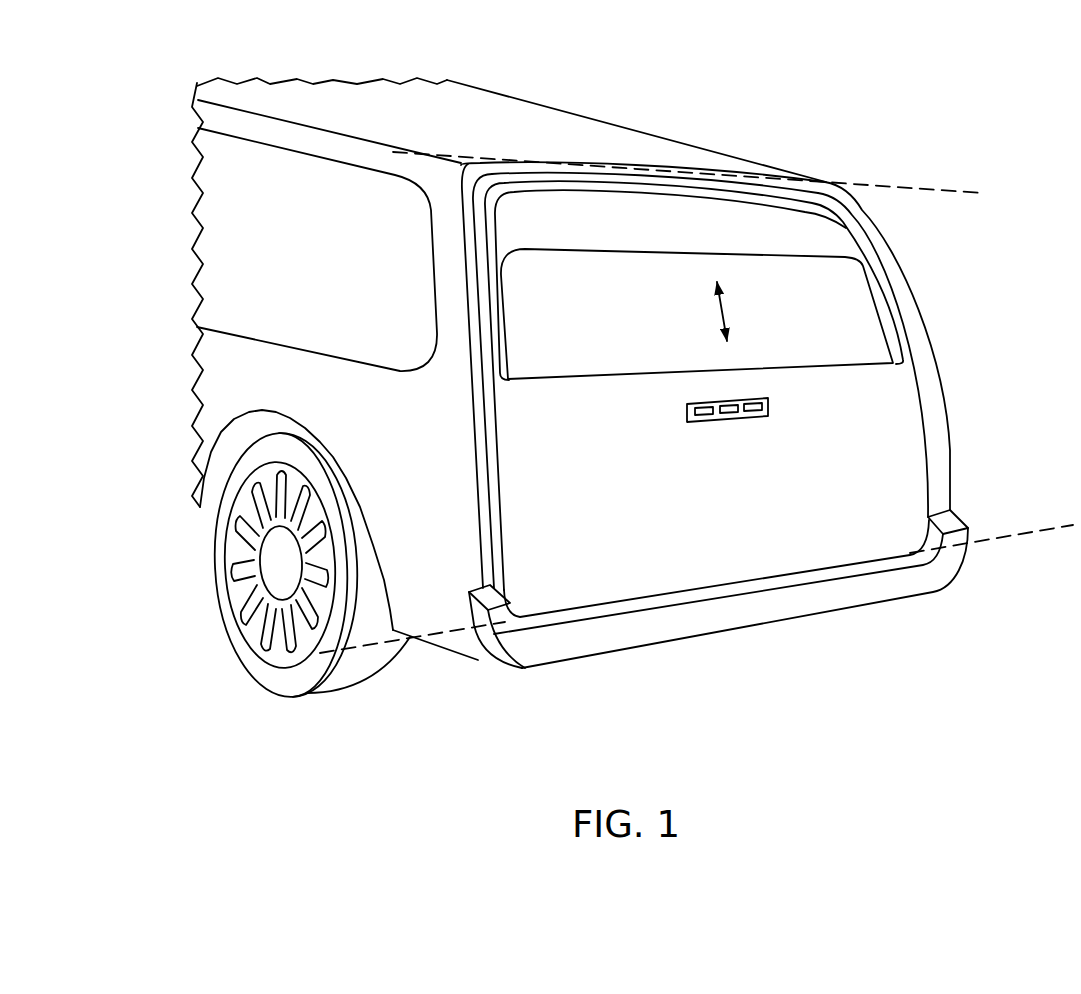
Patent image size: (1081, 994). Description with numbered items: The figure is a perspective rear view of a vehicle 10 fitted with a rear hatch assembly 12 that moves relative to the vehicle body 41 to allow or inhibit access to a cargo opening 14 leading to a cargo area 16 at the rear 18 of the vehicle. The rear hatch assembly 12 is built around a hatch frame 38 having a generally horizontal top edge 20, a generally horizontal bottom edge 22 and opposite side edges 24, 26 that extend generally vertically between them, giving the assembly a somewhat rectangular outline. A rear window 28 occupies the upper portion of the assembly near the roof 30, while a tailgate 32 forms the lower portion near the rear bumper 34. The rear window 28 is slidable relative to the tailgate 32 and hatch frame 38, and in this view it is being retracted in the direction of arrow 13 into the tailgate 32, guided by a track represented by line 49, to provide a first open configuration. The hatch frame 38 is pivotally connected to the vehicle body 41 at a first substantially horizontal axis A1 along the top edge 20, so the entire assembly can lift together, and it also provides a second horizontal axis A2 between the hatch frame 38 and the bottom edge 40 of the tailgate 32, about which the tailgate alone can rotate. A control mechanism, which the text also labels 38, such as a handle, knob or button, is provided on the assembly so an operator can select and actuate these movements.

The vehicle 10 is at (842, 85).
The rear hatch assembly 12 is at (947, 347).
The arrow 13 is at (717, 312).
The cargo opening 14 is at (567, 230).
The cargo area 16 is at (763, 223).
The rear 18 is at (930, 582).
The top edge 20 is at (598, 163).
The bottom edge 22 is at (743, 583).
The side edge 24 is at (478, 437).
The side edge 26 is at (953, 423).
The rear window 28 is at (828, 345).
The roof 30 is at (620, 126).
The tailgate 32 is at (642, 577).
The rear bumper 34 is at (822, 602).
The hatch frame 38 is at (487, 317).
The bottom edge of the tailgate 40 is at (477, 538).
The vehicle body 41 is at (215, 388).
The track 49 is at (893, 301).
The first horizontal axis A1 is at (933, 191).
The second horizontal axis A2 is at (1032, 532).